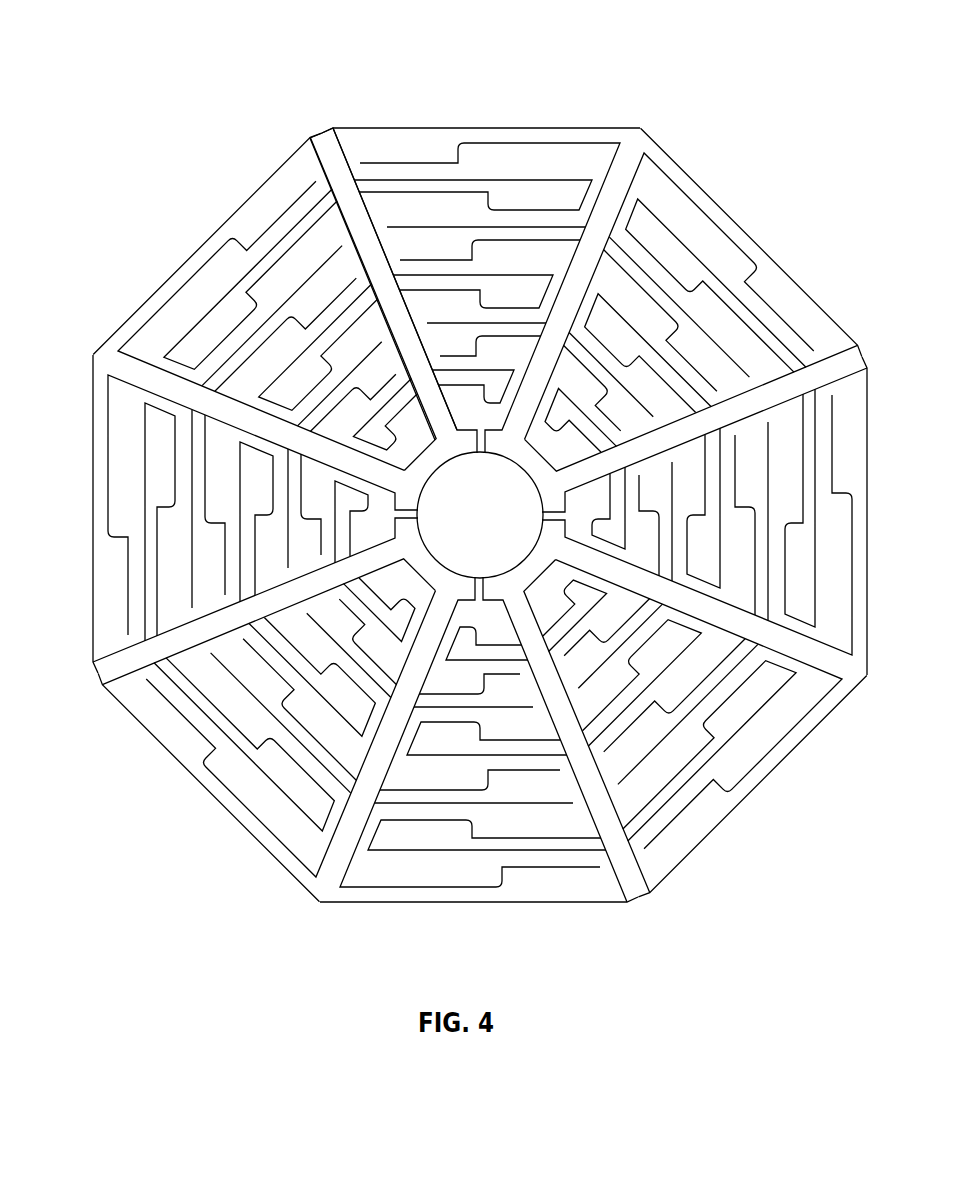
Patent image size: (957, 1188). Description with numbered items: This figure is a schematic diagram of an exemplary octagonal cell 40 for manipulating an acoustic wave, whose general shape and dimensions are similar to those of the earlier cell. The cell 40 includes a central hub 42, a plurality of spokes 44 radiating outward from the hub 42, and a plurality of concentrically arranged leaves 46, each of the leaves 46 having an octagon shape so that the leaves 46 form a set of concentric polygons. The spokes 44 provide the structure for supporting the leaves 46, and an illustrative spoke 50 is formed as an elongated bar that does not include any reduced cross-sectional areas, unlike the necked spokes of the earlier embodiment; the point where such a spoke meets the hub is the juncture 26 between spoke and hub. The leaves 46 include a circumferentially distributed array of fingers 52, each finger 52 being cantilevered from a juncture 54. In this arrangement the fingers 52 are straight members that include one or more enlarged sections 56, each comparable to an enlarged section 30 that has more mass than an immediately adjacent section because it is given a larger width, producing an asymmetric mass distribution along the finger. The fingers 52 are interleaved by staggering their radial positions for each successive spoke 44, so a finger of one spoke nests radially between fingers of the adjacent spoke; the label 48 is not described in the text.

The cell 40 is at (454, 465).
The hub 42 is at (450, 558).
The spokes 44 is at (329, 146).
The leaves 46 is at (465, 120).
The inner edge portion 48 is at (548, 582).
The spoke 50 is at (118, 364).
The fingers 52 is at (208, 251).
The juncture 54 is at (100, 393).
The enlarged sections 56 is at (276, 193).
The juncture 26 is at (412, 448).
The enlarged section 30 is at (163, 287).